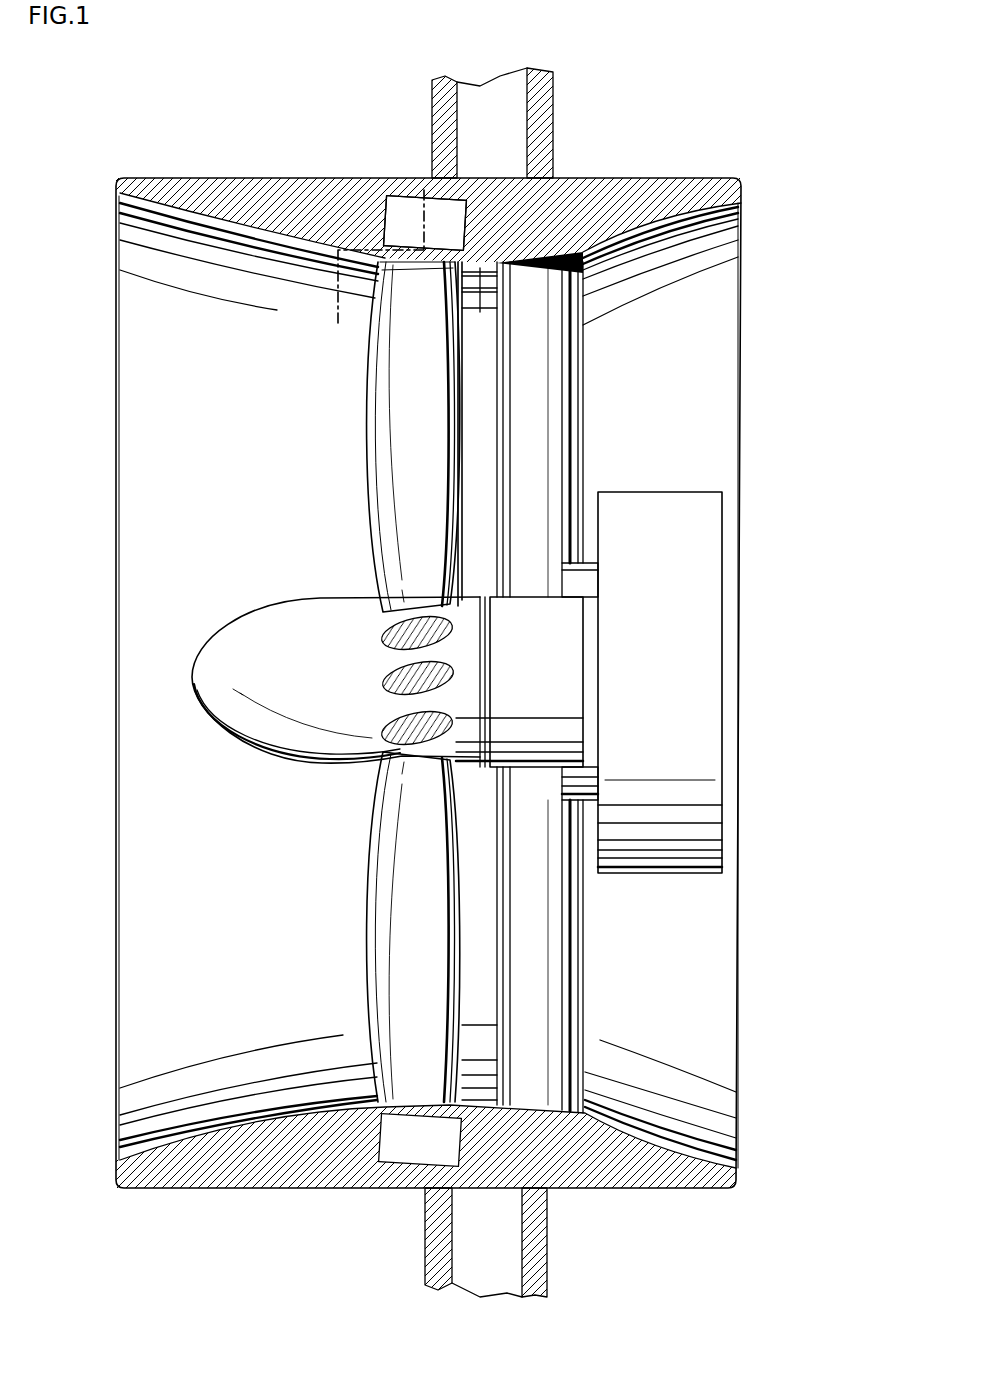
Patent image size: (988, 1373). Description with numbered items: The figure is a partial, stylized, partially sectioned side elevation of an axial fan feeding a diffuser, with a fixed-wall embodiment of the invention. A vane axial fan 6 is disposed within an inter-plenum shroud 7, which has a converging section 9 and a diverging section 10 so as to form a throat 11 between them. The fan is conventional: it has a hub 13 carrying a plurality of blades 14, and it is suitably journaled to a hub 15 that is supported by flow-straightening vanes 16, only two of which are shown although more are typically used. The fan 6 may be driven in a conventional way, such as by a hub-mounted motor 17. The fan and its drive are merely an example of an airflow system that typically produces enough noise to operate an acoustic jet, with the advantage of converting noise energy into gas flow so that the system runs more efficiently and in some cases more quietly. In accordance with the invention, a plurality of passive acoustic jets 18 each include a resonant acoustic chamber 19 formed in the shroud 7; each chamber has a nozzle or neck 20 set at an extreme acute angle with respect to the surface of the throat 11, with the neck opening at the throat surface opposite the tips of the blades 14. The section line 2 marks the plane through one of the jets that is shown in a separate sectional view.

The section line 2- 2 is at (356, 318).
The vane axial fan 6 is at (327, 682).
The inter-plenum shroud 7 is at (331, 178).
The converging section 9 is at (248, 232).
The diverging section 10 is at (660, 228).
The throat 11 is at (478, 681).
The hub 13 is at (247, 638).
The blades 14 is at (400, 446).
The hub 15 is at (544, 632).
The flow-straightening vanes 16 is at (544, 416).
The hub-mounted motor 17 is at (660, 492).
The passive acoustic jets 18 is at (402, 197).
The resonant acoustic chamber 19 is at (417, 234).
The neck 20 is at (437, 256).